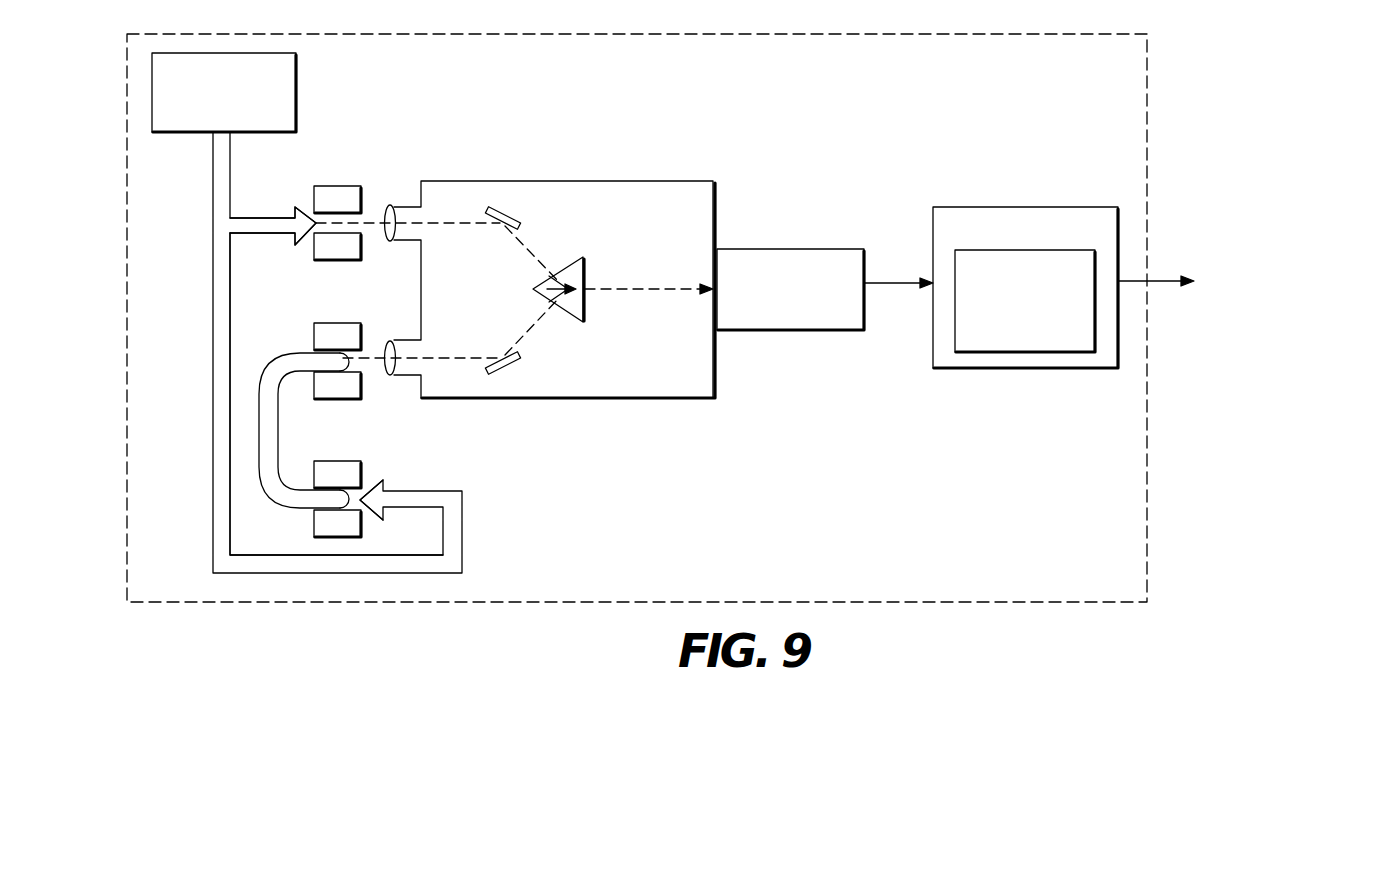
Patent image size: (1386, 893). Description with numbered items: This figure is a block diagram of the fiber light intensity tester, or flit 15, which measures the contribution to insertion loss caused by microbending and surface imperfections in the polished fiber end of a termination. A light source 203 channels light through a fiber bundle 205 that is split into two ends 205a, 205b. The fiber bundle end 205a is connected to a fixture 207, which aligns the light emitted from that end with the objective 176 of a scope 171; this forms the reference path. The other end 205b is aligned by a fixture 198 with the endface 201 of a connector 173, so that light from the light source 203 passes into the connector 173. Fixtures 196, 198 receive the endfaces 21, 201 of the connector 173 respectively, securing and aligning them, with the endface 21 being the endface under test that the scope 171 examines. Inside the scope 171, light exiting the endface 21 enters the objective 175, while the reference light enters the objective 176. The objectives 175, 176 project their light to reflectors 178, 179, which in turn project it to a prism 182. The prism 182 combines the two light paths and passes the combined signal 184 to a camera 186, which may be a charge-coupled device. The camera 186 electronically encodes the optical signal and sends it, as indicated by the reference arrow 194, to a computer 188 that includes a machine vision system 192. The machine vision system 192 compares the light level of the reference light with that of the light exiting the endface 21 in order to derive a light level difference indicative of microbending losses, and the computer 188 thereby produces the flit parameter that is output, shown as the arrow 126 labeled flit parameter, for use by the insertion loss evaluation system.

The flit 15 is at (1149, 80).
The light source 203 is at (297, 70).
The fiber bundle 205 is at (232, 158).
The fiber bundle end 205a is at (217, 209).
The end of the fiber bundle 205b is at (218, 464).
The fixture 207 is at (328, 186).
The objective 176 is at (403, 226).
The objective 175 is at (403, 357).
The scope 171 is at (571, 180).
The reflector 179 is at (522, 217).
The reflector 178 is at (518, 364).
The prism 182 is at (586, 309).
The combined signal 184 is at (674, 288).
The camera 186 is at (789, 335).
The reference arrow 194 is at (897, 283).
The computer 188 is at (1033, 206).
The machine vision system 192 is at (955, 313).
The FLIT parameter output 126 is at (1157, 280).
The fixture 196 is at (331, 330).
The endface 21 is at (332, 360).
The connector 173 is at (270, 448).
The endface 201 is at (341, 488).
The fixture 198 is at (319, 526).